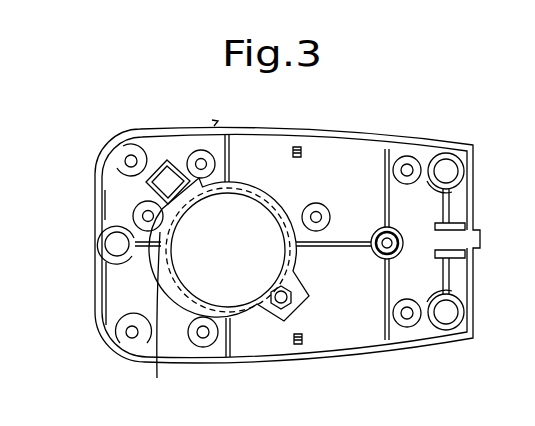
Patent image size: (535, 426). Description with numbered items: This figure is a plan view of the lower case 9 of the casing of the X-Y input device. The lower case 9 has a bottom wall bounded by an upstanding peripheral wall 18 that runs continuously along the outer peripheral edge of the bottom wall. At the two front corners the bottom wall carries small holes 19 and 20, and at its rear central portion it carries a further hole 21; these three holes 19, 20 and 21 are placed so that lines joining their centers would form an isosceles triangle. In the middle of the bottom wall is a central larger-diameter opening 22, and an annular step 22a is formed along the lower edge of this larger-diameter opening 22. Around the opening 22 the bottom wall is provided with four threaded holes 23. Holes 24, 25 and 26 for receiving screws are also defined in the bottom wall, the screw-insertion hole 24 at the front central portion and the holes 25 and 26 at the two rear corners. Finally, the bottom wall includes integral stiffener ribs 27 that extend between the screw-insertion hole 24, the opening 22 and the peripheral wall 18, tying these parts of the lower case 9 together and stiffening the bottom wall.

The lower case 9 is at (377, 132).
The peripheral wall 18 is at (219, 114).
The small hole 19 is at (444, 160).
The small hole 20 is at (445, 320).
The hole 21 is at (103, 242).
The larger-diameter opening 22 is at (228, 250).
The annular step 22a is at (255, 188).
The threaded holes 23 is at (198, 158).
The screw-insertion hole 24 is at (398, 240).
The hole for receiving screw 25 is at (130, 155).
The hole for receiving screw 26 is at (128, 333).
The stiffener ribs 27 is at (230, 153).